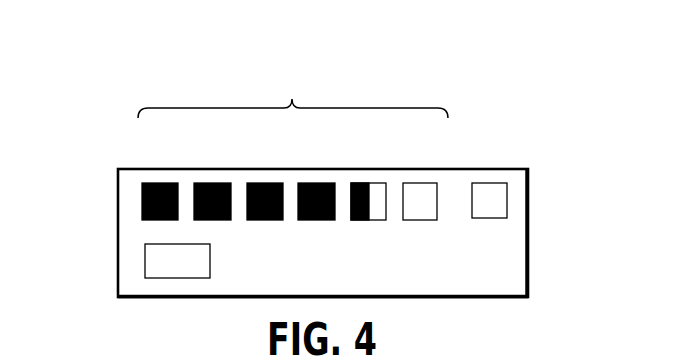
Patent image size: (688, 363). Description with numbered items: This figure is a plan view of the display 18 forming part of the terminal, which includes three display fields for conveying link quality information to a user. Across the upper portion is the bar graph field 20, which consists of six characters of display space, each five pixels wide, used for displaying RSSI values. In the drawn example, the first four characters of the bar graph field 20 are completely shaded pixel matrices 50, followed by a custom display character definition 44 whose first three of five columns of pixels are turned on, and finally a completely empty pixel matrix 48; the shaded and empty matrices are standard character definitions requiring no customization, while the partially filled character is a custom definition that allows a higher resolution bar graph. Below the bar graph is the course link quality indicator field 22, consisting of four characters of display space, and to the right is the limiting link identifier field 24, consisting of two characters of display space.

The display 18 is at (82, 201).
The bar graph field 20 is at (293, 87).
The course link quality indicator field 22 is at (210, 261).
The limiting link identifier field 24 is at (507, 203).
The new display character definition 44 is at (369, 183).
The completely empty pixel matrix 48 is at (421, 183).
The completely shaded pixel matrix 50 is at (160, 183).